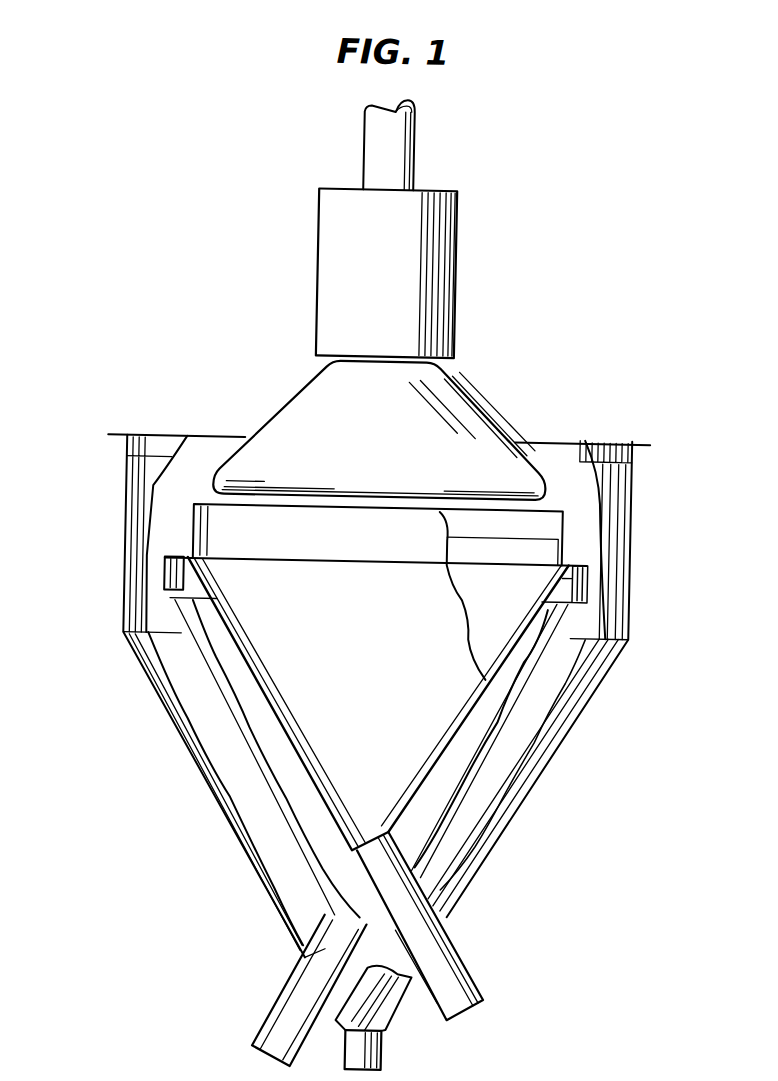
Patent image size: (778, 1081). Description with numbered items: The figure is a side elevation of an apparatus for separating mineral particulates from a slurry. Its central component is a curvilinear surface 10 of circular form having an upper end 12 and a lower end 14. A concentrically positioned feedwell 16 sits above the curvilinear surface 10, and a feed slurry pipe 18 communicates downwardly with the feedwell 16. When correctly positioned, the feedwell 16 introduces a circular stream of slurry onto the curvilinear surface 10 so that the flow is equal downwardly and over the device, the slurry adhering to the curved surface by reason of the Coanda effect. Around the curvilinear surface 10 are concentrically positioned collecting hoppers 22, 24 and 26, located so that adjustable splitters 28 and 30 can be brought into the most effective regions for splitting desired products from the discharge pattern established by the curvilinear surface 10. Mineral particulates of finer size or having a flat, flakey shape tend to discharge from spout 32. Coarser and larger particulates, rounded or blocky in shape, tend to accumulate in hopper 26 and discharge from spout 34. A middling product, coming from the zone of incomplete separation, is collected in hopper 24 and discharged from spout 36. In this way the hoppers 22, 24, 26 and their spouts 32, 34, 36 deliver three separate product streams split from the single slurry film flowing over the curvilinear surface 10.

The curvilinear surface 10 is at (490, 408).
The upper end 12 is at (440, 371).
The lower end 14 is at (533, 487).
The feedwell 16 is at (432, 281).
The feed slurry pipe 18 is at (389, 159).
The collecting hopper 22 is at (367, 653).
The collecting hopper 24 is at (243, 726).
The collecting hopper 26 is at (532, 777).
The adjustable splitter 28 is at (366, 544).
The adjustable splitter 30 is at (162, 580).
The spout 32 is at (473, 991).
The spout 34 is at (375, 1057).
The spout 36 is at (293, 1027).